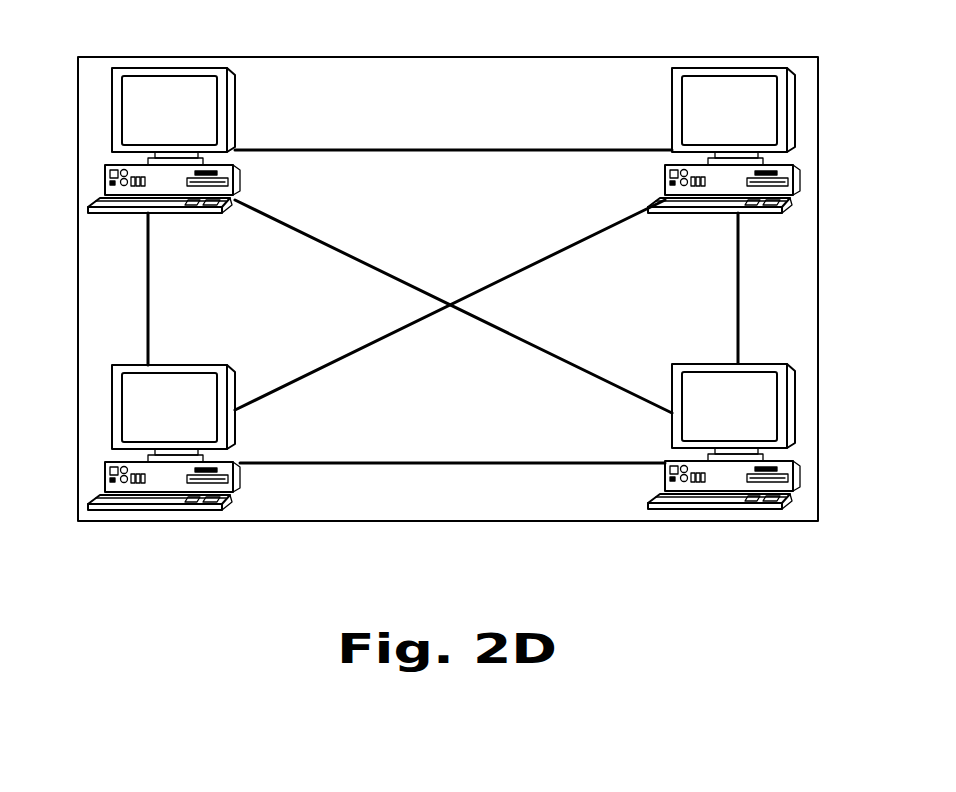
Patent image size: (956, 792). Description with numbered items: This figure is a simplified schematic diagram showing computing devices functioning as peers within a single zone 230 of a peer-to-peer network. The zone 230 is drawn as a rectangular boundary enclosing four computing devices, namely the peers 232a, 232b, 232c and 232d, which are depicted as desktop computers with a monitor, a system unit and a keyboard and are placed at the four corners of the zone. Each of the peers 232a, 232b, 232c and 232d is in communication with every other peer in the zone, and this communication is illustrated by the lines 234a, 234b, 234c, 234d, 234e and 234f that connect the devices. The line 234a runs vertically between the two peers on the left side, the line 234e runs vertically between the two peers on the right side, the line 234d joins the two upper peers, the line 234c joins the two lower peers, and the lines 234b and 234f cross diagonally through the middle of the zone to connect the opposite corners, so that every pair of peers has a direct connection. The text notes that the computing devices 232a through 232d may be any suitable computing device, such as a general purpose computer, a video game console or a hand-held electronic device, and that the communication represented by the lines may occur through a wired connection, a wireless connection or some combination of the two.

The zone 230 is at (463, 57).
The peer 232a is at (103, 510).
The peer 232b is at (762, 67).
The peer 232c is at (737, 510).
The peer 232d is at (120, 67).
The line 234a is at (147, 282).
The line 234b is at (325, 363).
The line 234c is at (498, 465).
The line 234d is at (497, 150).
The line 234e is at (738, 292).
The line 234f is at (312, 233).